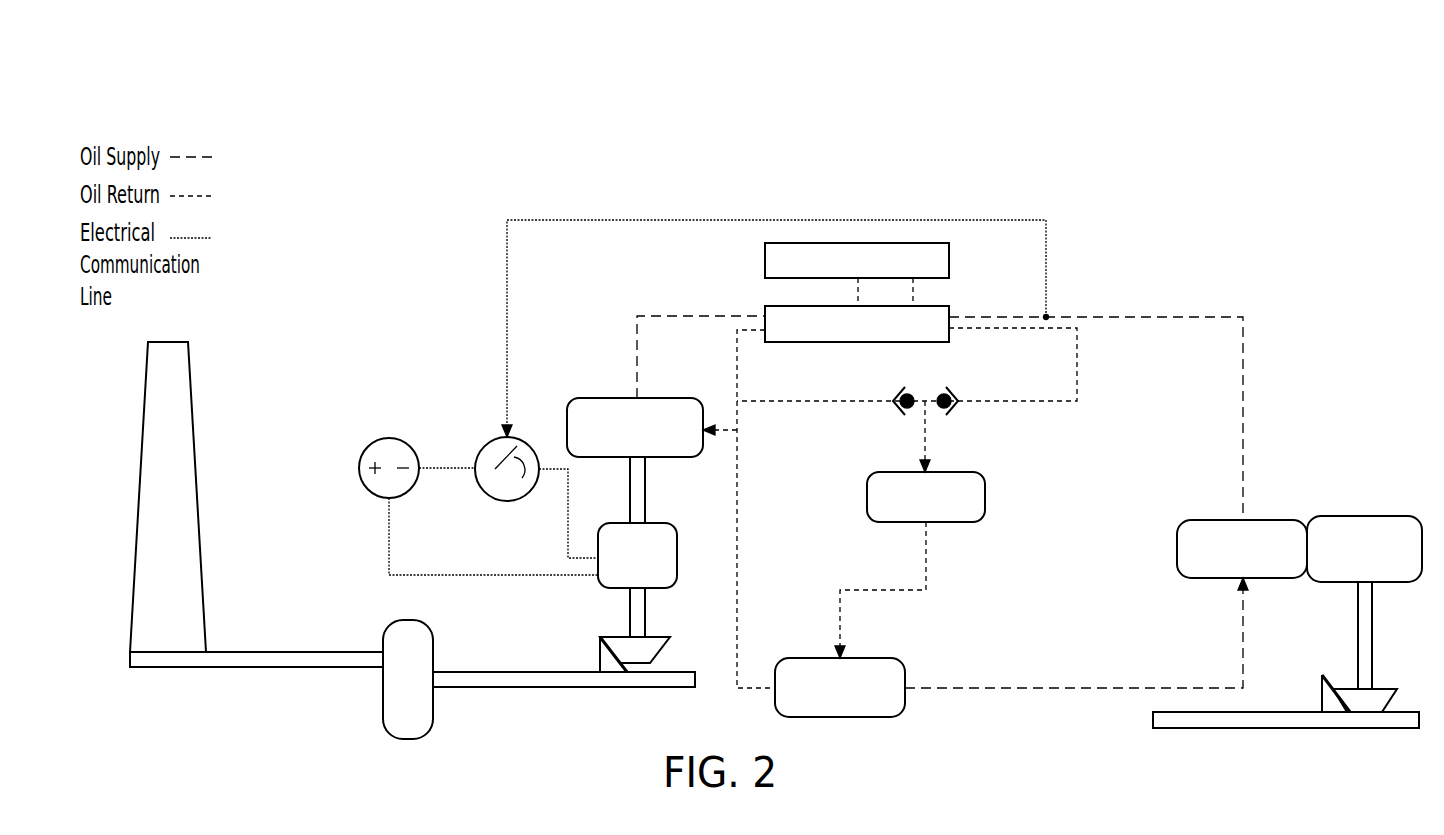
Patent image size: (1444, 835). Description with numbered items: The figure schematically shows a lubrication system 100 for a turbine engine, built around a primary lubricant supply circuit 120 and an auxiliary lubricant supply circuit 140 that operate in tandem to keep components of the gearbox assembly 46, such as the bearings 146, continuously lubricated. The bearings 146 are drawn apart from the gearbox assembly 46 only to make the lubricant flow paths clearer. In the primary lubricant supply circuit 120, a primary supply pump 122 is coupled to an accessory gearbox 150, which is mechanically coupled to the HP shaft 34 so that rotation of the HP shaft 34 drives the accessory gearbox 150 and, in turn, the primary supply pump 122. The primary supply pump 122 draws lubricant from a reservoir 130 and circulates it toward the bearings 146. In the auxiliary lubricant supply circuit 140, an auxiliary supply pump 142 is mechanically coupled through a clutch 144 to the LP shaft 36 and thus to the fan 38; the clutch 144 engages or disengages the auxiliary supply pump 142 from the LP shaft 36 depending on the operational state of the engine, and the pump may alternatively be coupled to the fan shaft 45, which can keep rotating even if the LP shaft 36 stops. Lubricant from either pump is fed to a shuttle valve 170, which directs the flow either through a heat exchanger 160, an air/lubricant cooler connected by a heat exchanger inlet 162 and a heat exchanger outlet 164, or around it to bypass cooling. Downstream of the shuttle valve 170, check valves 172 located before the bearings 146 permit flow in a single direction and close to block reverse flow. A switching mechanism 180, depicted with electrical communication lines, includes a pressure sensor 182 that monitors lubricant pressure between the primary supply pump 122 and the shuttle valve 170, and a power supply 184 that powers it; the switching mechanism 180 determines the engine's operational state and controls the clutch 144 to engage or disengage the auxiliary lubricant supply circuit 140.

The lubrication system 100 is at (344, 128).
The HP shaft 34 is at (1318, 730).
The LP shaft 36 is at (540, 690).
The fan 38 is at (150, 407).
The fan shaft 45 is at (275, 652).
The gearbox assembly 46 is at (408, 740).
The primary lubricant supply circuit 120 is at (1214, 353).
The primary supply pump 122 is at (1205, 520).
The reservoir 130 is at (812, 658).
The auxiliary lubricant supply circuit 140 is at (656, 336).
The auxiliary supply pump 142 is at (612, 398).
The clutch 144 is at (617, 523).
The bearings 146 is at (985, 497).
The accessory gearbox 150 is at (1380, 516).
The heat exchanger 160 is at (765, 262).
The heat exchanger inlet conduit 162 is at (858, 300).
The heat exchanger outlet conduit 164 is at (913, 300).
The shuttle valve 170 is at (795, 343).
The check valves 172 is at (958, 410).
The switching mechanism 180 is at (616, 210).
The pressure sensor 182 is at (487, 444).
The power supply 184 is at (370, 443).